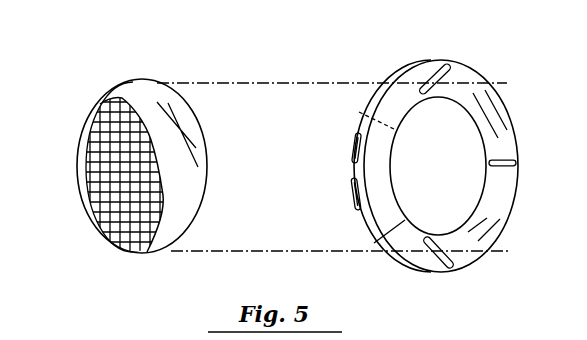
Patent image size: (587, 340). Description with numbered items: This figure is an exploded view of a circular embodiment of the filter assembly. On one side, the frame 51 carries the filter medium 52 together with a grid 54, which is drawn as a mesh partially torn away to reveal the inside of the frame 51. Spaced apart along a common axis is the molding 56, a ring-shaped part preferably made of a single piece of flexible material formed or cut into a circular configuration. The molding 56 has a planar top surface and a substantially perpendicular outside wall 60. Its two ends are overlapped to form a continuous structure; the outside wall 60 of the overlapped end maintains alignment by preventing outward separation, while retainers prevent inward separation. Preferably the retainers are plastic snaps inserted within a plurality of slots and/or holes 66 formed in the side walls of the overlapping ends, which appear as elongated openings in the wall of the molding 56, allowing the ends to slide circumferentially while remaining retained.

The frame 51 is at (97, 112).
The filter medium 52 is at (147, 98).
The grid 54 is at (95, 182).
The outside wall 60 is at (395, 77).
The molding 56 is at (517, 128).
The slots and/or holes 66 is at (352, 190).